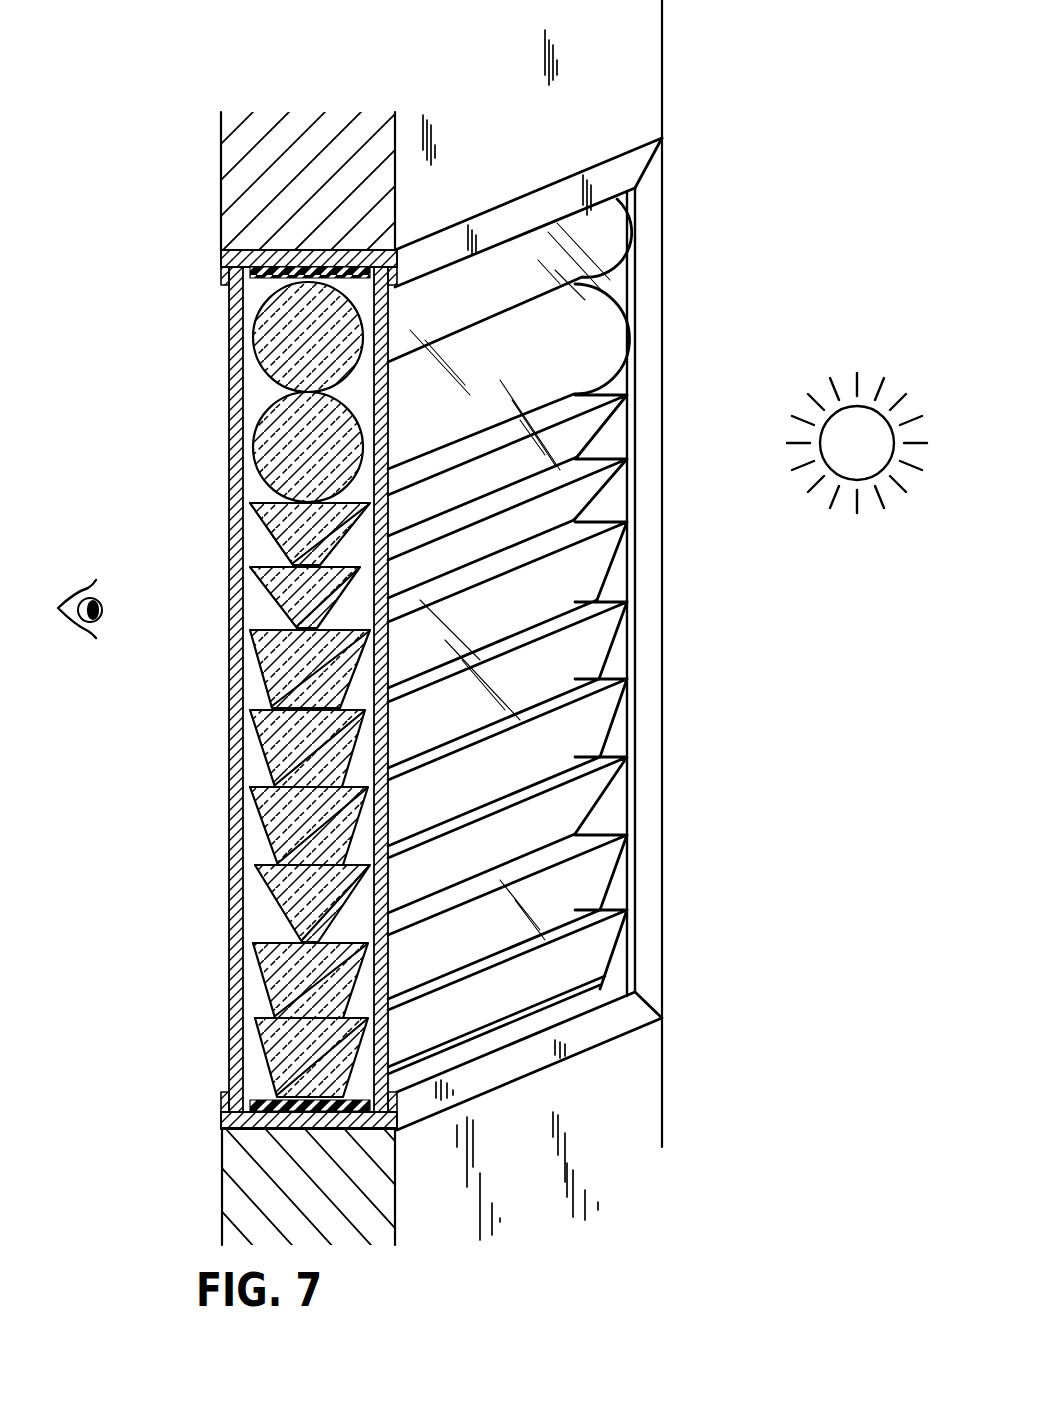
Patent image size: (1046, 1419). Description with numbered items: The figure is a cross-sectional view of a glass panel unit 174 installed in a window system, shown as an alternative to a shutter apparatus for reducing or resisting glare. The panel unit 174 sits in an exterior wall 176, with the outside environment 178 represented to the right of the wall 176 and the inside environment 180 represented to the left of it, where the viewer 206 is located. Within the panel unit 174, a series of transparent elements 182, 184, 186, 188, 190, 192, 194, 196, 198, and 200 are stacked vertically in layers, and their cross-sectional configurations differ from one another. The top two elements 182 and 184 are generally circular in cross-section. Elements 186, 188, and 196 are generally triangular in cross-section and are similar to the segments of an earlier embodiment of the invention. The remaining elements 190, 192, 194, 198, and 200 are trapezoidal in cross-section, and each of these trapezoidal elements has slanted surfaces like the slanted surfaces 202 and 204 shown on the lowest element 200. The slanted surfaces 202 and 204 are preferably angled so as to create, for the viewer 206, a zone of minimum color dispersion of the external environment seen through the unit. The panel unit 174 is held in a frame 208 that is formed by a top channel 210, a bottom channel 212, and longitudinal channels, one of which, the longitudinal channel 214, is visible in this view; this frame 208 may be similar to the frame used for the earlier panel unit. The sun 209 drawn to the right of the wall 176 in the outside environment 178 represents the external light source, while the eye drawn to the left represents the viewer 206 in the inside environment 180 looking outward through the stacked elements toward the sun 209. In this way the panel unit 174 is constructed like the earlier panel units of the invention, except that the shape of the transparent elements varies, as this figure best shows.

The panel unit 174 is at (212, 305).
The exterior wall 176 is at (548, 129).
The outside environment 178 is at (823, 160).
The inside environment 180 is at (118, 160).
The transparent element 182 is at (272, 338).
The transparent element 184 is at (272, 430).
The transparent element 186 is at (277, 533).
The transparent element 188 is at (283, 593).
The transparent element 190 is at (273, 677).
The transparent element 192 is at (272, 750).
The transparent element 194 is at (278, 833).
The transparent element 196 is at (282, 895).
The transparent element 198 is at (273, 980).
The transparent element 200 is at (273, 1045).
The slanted surface 202 is at (392, 1048).
The slanted surface 204 is at (262, 1064).
The viewer 206 is at (62, 613).
The frame 208 is at (563, 160).
The sun 209 is at (850, 420).
The top channel 210 is at (510, 213).
The bottom channel 212 is at (545, 1060).
The longitudinal channel 214 is at (650, 312).